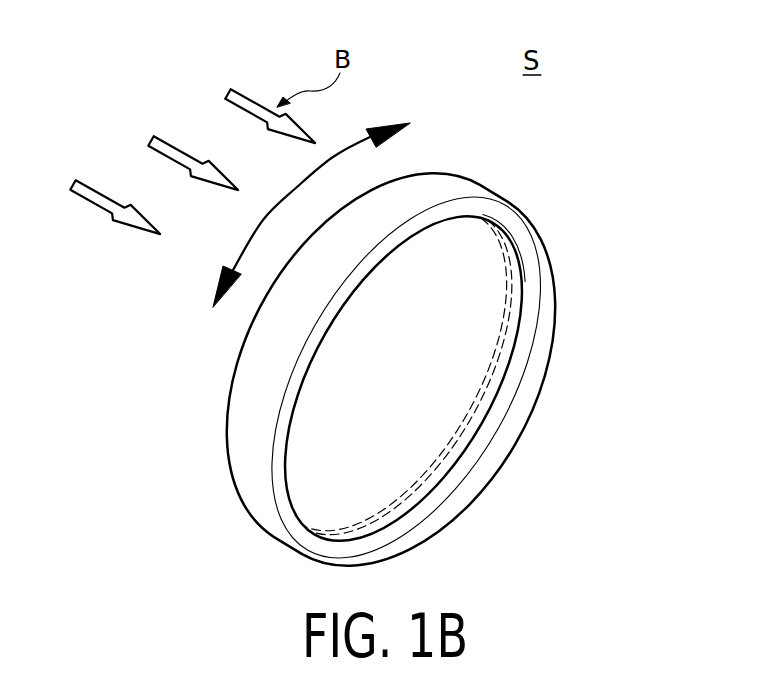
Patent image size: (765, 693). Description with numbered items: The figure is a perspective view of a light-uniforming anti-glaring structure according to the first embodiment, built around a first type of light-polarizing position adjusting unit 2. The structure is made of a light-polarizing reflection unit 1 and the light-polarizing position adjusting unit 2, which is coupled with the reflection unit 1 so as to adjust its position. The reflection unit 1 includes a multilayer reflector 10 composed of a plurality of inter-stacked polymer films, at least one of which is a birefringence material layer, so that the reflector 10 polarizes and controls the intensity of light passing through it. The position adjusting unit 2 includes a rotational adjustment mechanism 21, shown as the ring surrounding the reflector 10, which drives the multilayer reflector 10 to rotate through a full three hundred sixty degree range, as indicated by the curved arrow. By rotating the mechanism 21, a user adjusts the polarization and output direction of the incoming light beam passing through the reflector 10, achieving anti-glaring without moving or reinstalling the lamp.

The light-polarizing reflection unit 1 is at (444, 378).
The multilayer reflector 10 is at (428, 356).
The light-polarizing position adjusting unit 2 is at (429, 378).
The rotational adjustment mechanism 21 is at (460, 192).